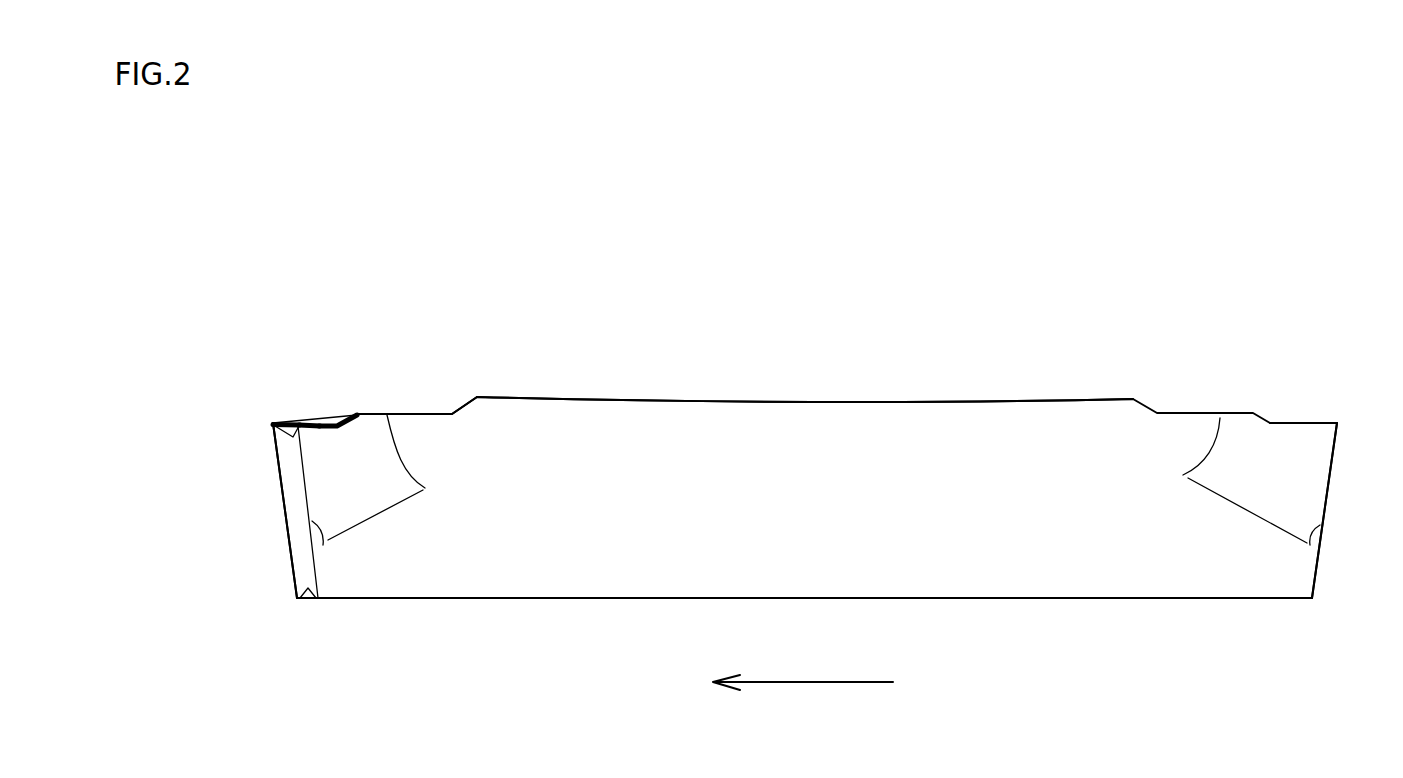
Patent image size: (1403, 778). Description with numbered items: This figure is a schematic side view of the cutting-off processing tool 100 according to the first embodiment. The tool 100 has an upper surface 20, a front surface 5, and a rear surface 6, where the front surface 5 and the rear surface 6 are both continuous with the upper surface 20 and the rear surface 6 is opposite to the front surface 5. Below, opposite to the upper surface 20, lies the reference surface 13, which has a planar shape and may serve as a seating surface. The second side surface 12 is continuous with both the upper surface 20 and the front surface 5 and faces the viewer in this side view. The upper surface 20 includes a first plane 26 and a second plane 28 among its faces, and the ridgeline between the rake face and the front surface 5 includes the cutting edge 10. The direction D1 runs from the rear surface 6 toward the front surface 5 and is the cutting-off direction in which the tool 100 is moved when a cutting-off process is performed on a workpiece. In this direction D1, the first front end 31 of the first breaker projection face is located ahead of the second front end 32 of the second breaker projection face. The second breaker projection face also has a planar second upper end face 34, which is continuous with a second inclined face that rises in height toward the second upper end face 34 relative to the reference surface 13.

The cutting-off processing tool 100 is at (984, 330).
The upper surface 20 is at (228, 343).
The first front end 31 is at (273, 421).
The second front end 32 is at (297, 422).
The second upper end face 34 is at (320, 423).
The first plane 26 is at (433, 413).
The second plane 28 is at (713, 399).
The cutting edge 10 is at (282, 437).
The front surface 5 is at (298, 518).
The rear surface 6 is at (1325, 497).
The second side surface 12 is at (565, 533).
The reference surface 13 is at (348, 600).
The direction from rear surface to front surface D1 is at (802, 684).